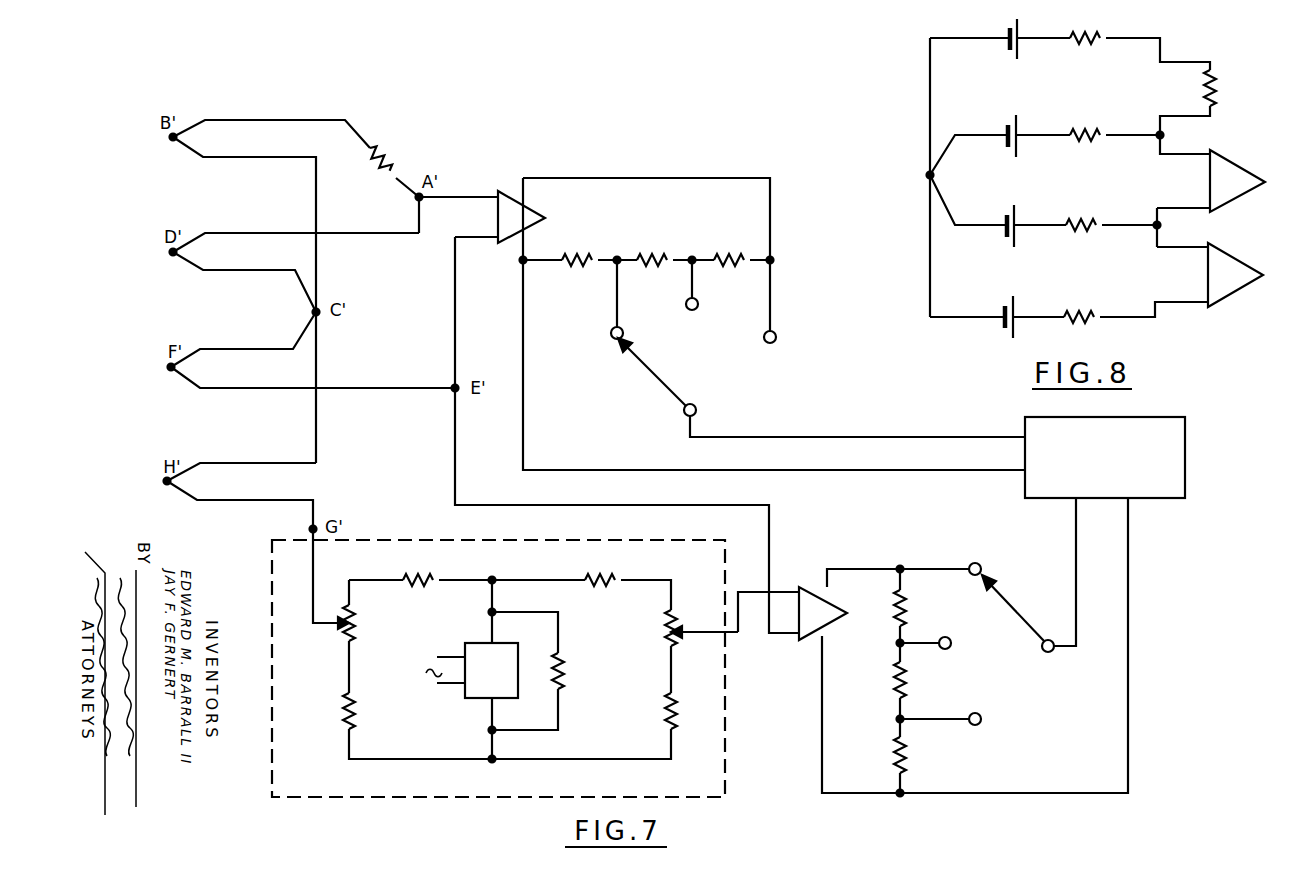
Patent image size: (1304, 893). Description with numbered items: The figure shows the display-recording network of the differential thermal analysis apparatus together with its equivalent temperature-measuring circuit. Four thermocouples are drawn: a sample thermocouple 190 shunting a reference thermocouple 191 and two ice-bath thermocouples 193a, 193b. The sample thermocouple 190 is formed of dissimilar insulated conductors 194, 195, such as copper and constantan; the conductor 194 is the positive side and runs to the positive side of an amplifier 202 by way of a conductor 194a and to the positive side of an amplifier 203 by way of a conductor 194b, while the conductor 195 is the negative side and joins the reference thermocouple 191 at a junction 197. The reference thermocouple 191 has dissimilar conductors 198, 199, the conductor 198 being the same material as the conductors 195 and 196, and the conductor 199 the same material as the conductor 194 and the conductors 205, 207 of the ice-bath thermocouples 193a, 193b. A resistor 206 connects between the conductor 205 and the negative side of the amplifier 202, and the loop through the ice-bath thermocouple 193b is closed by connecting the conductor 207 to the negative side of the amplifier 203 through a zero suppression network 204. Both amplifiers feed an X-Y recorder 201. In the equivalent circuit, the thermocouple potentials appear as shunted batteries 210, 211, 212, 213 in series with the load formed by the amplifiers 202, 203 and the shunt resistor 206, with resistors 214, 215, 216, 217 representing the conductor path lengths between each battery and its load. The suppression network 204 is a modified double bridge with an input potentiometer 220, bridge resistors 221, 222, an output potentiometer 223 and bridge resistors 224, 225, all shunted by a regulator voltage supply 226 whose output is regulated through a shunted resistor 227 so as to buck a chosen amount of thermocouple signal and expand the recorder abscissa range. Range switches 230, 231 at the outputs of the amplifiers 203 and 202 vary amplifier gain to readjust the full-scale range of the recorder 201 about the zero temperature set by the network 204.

In FIG. 7, the sample thermocouple 190 is at (168, 368).
In FIG. 7, the reference thermocouple 191 is at (170, 253).
In FIG. 7, the ice-bath thermocouple 193a is at (170, 139).
In FIG. 7, the ice-bath thermocouple 193b is at (165, 482).
In FIG. 7, the conductor 194 is at (252, 389).
In FIG. 7, the conductor 194a is at (453, 333).
In FIG. 7, the conductor 194b is at (452, 445).
In FIG. 7, the conductor 195 is at (270, 347).
In FIG. 7, the conductor 196 is at (253, 158).
In FIG. 7, the junction 197 is at (323, 305).
In FIG. 7, the conductor 198 is at (252, 272).
In FIG. 7, the conductor 199 is at (277, 233).
In FIG. 7, the X-Y recorder 201 is at (1187, 460).
In FIG. 7, the amplifier 202 is at (508, 192).
In FIG. 8, the amplifier 202 is at (1238, 163).
In FIG. 7, the amplifier 203 is at (810, 588).
In FIG. 8, the amplifier 203 is at (1237, 257).
In FIG. 7, the zero suppression network 204 is at (725, 723).
In FIG. 7, the conductor 205 is at (277, 119).
In FIG. 7, the resistor 206 is at (390, 158).
In FIG. 8, the resistor 206 is at (1218, 93).
In FIG. 7, the conductor 207 is at (247, 502).
In FIG. 8, the battery 210 is at (1007, 47).
In FIG. 8, the battery 211 is at (1018, 127).
In FIG. 8, the battery 212 is at (1018, 220).
In FIG. 8, the battery 213 is at (1018, 313).
In FIG. 8, the resistor 214 is at (1088, 47).
In FIG. 8, the resistor 215 is at (1087, 139).
In FIG. 8, the resistor 216 is at (1082, 230).
In FIG. 8, the resistor 217 is at (1088, 313).
In FIG. 7, the input potentiometer 220 is at (357, 618).
In FIG. 7, the bridge resistor 221 is at (422, 588).
In FIG. 7, the bridge resistor 222 is at (353, 717).
In FIG. 7, the output potentiometer 223 is at (668, 637).
In FIG. 7, the bridge resistor 224 is at (600, 590).
In FIG. 7, the bridge resistor 225 is at (665, 723).
In FIG. 7, the regulator voltage supply 226 is at (470, 700).
In FIG. 7, the resistor 227 is at (562, 667).
In FIG. 7, the range switch 230 is at (1021, 675).
In FIG. 7, the range switch 231 is at (716, 361).